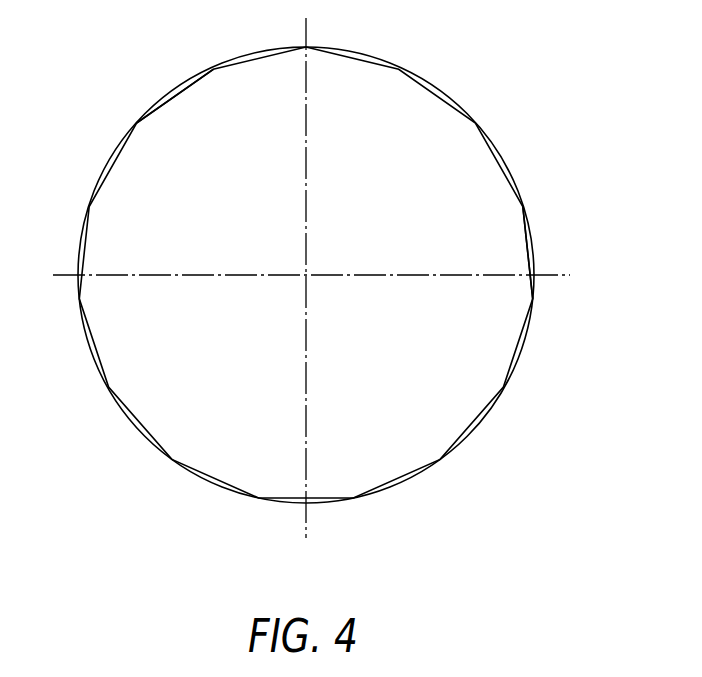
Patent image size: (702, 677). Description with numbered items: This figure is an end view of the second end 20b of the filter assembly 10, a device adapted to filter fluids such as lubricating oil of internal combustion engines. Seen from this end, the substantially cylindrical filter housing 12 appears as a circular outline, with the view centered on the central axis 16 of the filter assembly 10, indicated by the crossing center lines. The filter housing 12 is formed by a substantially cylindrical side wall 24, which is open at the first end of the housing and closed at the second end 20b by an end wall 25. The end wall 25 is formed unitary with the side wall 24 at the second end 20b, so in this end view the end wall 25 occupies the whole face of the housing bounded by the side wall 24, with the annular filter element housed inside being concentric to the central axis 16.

The filter assembly 10 is at (82, 333).
The filter housing 12 is at (446, 91).
The central axis 16 is at (307, 275).
The second end 20b is at (153, 142).
The side wall 24 is at (530, 247).
The end wall 25 is at (223, 252).